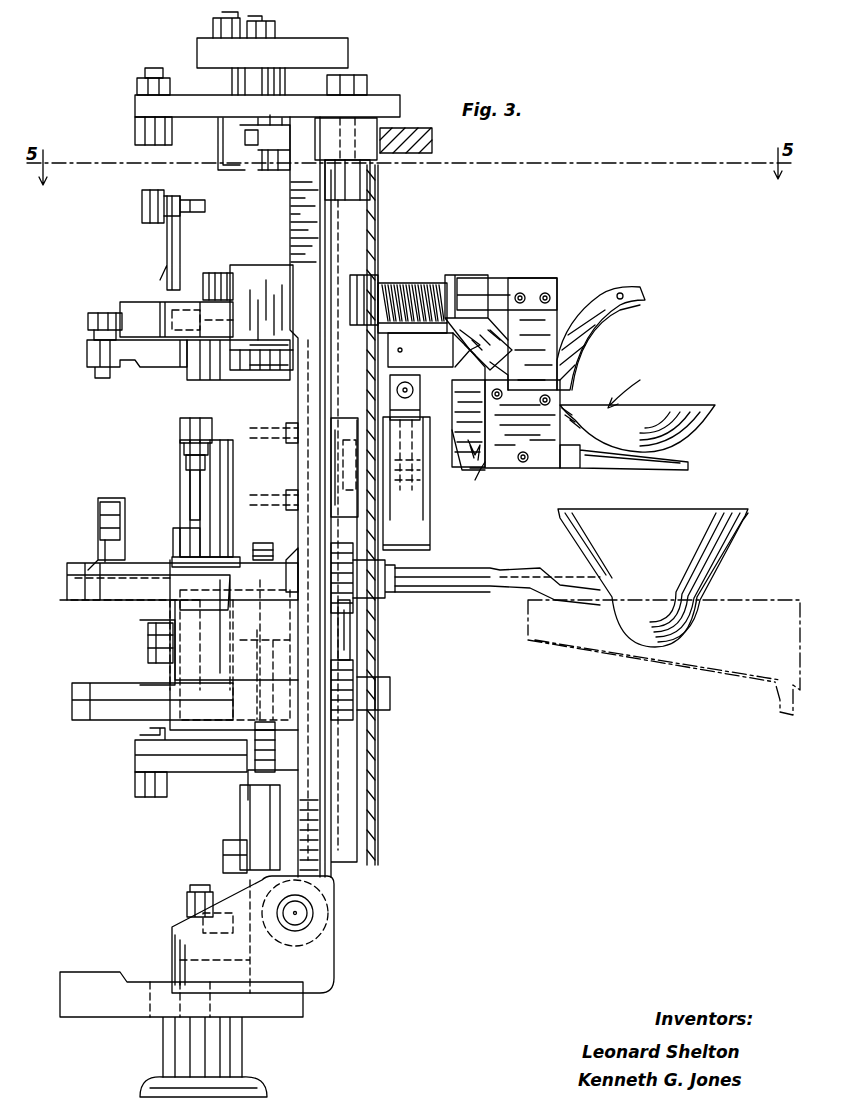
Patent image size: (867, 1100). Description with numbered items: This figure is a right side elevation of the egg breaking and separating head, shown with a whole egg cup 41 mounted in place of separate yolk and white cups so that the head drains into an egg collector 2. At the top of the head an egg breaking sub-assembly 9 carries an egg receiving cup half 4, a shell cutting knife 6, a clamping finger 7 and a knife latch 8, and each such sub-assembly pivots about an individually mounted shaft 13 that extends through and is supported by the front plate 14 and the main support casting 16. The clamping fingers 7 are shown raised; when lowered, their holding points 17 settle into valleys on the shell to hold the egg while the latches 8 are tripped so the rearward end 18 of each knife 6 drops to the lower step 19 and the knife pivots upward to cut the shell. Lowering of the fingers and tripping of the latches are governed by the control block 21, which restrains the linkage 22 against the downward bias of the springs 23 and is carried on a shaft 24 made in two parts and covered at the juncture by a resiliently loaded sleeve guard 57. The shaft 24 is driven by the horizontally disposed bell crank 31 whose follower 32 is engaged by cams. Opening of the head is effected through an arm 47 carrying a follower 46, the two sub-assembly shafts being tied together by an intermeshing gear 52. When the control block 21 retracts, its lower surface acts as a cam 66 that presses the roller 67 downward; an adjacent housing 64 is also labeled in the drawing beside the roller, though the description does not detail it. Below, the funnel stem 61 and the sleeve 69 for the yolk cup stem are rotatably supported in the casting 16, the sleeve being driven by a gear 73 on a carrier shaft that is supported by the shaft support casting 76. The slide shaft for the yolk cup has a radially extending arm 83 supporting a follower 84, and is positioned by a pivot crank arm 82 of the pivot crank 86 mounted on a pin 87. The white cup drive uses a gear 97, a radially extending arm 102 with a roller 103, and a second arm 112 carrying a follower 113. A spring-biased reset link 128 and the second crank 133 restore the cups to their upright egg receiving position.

The egg collector 2 is at (765, 478).
The egg receiving cup halves 4 is at (706, 432).
The shell cutting knives 6 is at (578, 468).
The clamping fingers 7 is at (607, 298).
The knife latches 8 is at (452, 406).
The egg breaking sub-assembly 9 is at (630, 384).
The individually mounted shaft 13 is at (408, 283).
The front plate 14 is at (378, 805).
The main support casting 16 is at (334, 872).
The holding points 17 is at (595, 325).
The rearward end of knife 18 is at (485, 445).
The lower step 19 is at (491, 477).
The control block 21 is at (480, 275).
The linkage 22 is at (500, 358).
The springs 23 is at (415, 283).
The shaft 24 is at (213, 345).
The bell crank 31 is at (120, 370).
The follower 32 is at (100, 312).
The whole egg cup 41 is at (720, 546).
The follower 46 is at (141, 210).
The arm 47 is at (178, 240).
The gear 52 is at (215, 273).
The sleeve guard 57 is at (377, 285).
The stem 61 is at (437, 568).
The housing 64 is at (430, 540).
The cam 66 is at (418, 380).
The roller 67 is at (375, 400).
The sleeve 69 is at (385, 592).
The gear 73 is at (262, 543).
The shaft support casting 76 is at (90, 600).
The pivot crank arm 82 is at (182, 527).
The radially extending arm 83 is at (102, 508).
The follower 84 is at (112, 497).
The pivot crank 86 is at (222, 475).
The pin 87 is at (192, 418).
The gear 97 is at (258, 768).
The radially extending arm 102 is at (140, 650).
The roller 103 is at (148, 630).
The second arm 112 is at (175, 772).
The follower 113 is at (145, 797).
The reset link 128 is at (360, 632).
The second crank 133 is at (240, 828).